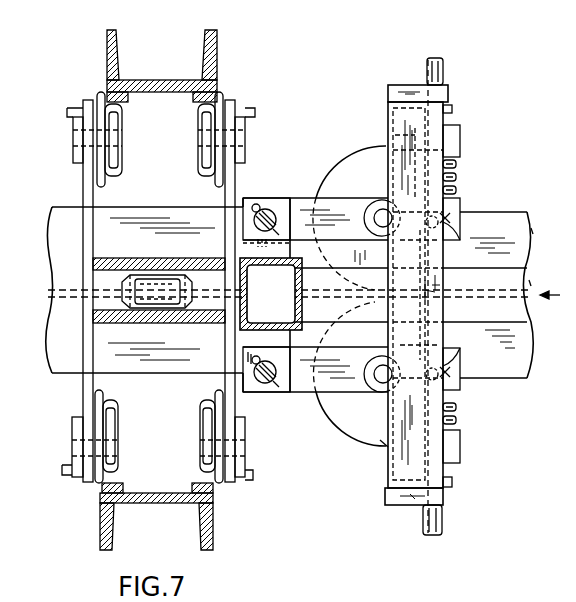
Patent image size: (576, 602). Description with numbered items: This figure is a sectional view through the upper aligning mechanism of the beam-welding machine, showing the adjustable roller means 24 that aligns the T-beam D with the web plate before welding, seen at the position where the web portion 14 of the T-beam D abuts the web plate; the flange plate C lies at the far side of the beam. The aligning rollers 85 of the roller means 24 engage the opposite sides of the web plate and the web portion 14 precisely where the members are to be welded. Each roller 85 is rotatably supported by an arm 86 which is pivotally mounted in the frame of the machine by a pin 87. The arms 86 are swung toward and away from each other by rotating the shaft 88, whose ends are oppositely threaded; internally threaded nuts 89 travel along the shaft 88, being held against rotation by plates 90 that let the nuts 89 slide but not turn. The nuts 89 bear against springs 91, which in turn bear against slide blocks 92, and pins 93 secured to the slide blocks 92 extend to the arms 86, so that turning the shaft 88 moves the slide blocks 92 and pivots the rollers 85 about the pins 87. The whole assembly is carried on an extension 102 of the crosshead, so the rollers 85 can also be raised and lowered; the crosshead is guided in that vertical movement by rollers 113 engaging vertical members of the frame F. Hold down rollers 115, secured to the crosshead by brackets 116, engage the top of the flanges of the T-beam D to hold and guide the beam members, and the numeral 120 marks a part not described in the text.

The web portion 14 is at (522, 305).
The roller means 24 is at (380, 449).
The aligning rollers 85 is at (356, 156).
The arms 86 is at (303, 197).
The pins 87 is at (268, 198).
The shaft 88 is at (445, 73).
The internally threaded nuts 89 is at (462, 140).
The plates 90 is at (452, 112).
The springs 91 is at (457, 177).
The slide blocks 92 is at (460, 208).
The pins 93 is at (460, 238).
The extension 102 is at (388, 114).
The rollers 113 is at (105, 90).
The hold down rollers 115 is at (130, 278).
The brackets 116 is at (208, 260).
The sheet number 120 is at (570, 600).
The flange plate C is at (532, 232).
The T-beam D is at (531, 285).
The frame F is at (223, 57).